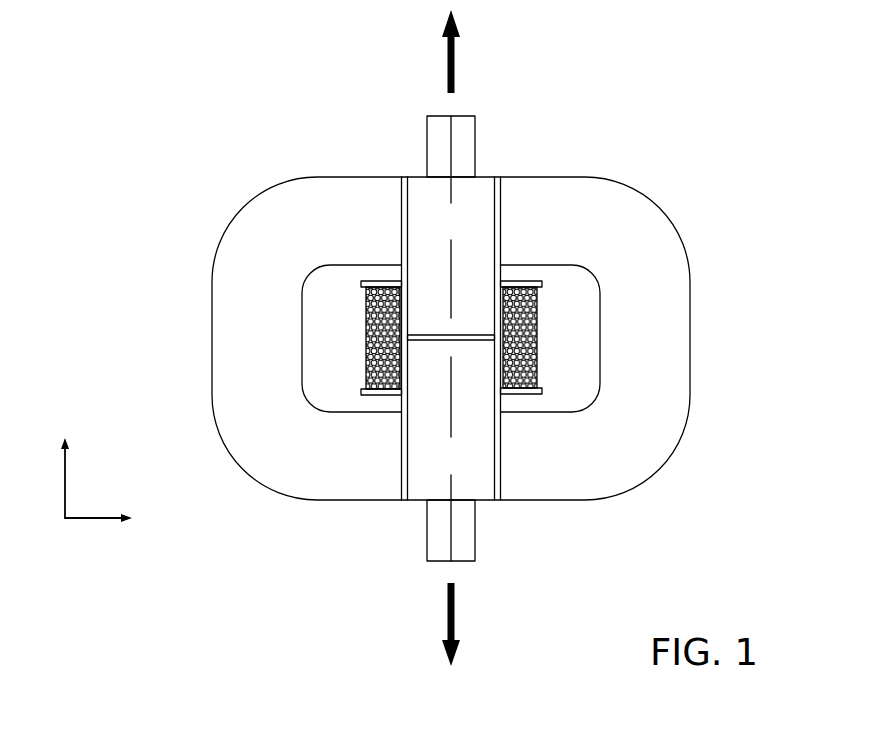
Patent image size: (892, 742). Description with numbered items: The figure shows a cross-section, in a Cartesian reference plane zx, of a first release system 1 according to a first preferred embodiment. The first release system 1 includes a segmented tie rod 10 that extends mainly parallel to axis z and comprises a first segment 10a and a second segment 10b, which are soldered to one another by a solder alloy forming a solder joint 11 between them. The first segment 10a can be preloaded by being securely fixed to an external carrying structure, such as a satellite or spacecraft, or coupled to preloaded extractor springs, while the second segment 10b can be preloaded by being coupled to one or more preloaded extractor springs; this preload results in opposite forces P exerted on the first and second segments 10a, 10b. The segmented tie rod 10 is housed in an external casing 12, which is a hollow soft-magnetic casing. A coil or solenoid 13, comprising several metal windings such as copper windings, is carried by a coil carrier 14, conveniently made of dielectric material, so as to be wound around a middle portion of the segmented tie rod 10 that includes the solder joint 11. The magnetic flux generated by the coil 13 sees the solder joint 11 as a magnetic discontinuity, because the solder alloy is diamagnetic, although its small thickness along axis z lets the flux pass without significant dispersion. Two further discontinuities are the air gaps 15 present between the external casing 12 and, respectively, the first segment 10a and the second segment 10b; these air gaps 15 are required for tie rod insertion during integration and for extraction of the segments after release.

The first release system 1 is at (721, 96).
The segmented tie rod 10 is at (406, 524).
The first segment 10a is at (483, 466).
The second segment 10b is at (483, 215).
The solder joint 11 is at (473, 338).
The external casing 12 is at (648, 238).
The coil or solenoid 13 is at (533, 311).
The coil carrier 14 is at (531, 395).
The air gaps 15 is at (497, 225).